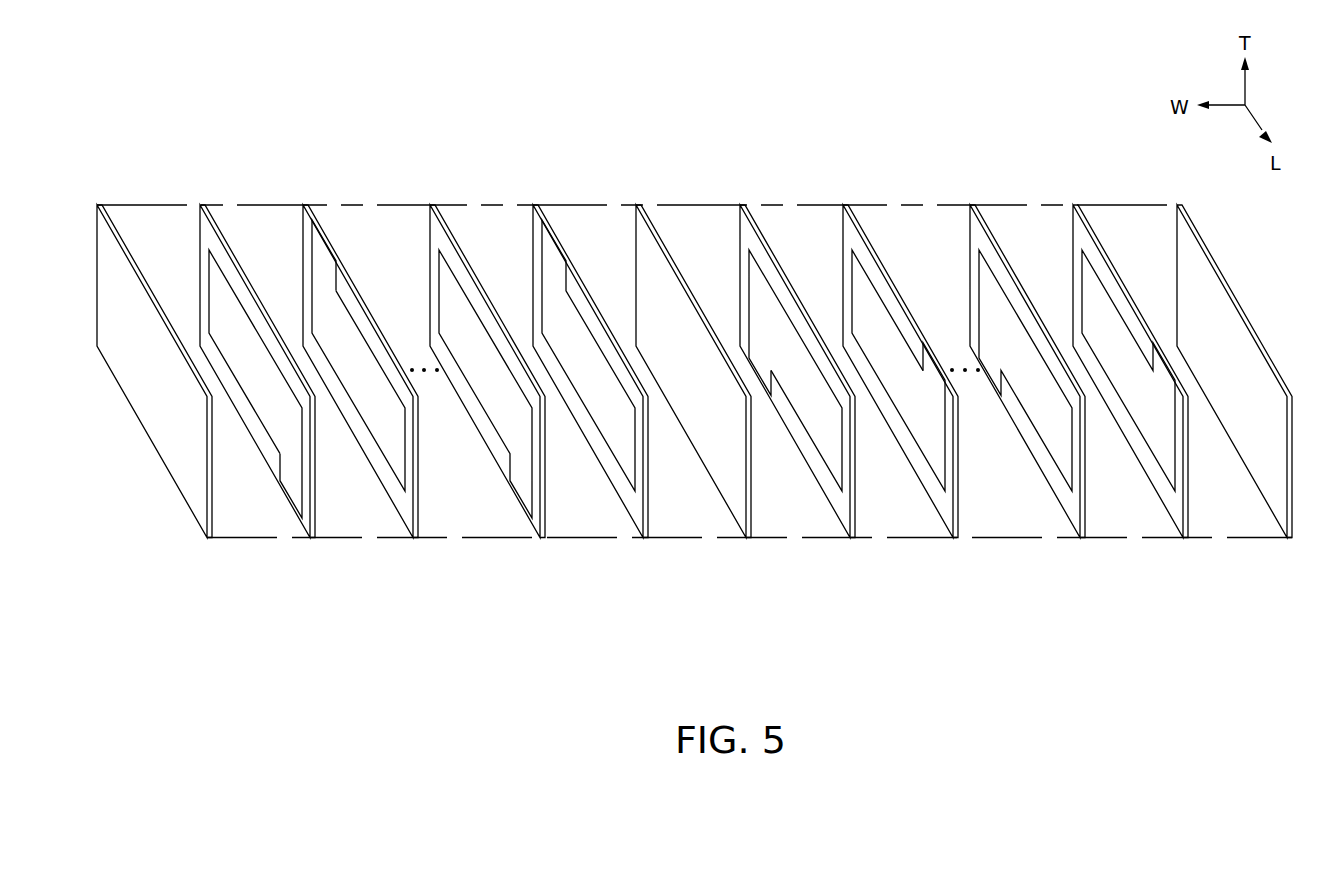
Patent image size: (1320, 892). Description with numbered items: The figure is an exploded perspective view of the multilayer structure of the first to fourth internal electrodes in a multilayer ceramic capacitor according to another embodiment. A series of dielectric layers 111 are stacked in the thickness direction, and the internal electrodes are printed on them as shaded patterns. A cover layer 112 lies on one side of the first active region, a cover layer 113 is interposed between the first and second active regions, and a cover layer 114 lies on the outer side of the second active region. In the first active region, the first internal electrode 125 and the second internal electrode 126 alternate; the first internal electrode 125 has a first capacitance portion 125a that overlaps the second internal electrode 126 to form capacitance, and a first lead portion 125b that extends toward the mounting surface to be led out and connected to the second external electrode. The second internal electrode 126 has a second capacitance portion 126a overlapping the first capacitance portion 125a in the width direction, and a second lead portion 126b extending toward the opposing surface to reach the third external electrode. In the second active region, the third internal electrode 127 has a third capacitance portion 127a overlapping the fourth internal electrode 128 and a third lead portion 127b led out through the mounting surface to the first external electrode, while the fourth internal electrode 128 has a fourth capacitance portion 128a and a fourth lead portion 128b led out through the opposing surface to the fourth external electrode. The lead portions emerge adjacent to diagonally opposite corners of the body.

The dielectric layer 111 is at (348, 298).
The cover layer 112 is at (185, 480).
The cover layer 113 is at (1190, 273).
The cover layer 114 is at (732, 497).
The first internal electrode 125 is at (242, 438).
The first capacitance portion 125a is at (270, 398).
The first lead portion 125b is at (293, 485).
The second internal electrode 126 is at (327, 306).
The second capacitance portion 126a is at (338, 325).
The second lead portion 126b is at (322, 257).
The third internal electrode 127 is at (789, 438).
The third capacitance portion 127a is at (815, 418).
The third lead portion 127b is at (758, 368).
The fourth internal electrode 128 is at (890, 306).
The fourth capacitance portion 128a is at (865, 303).
The fourth lead portion 128b is at (930, 377).